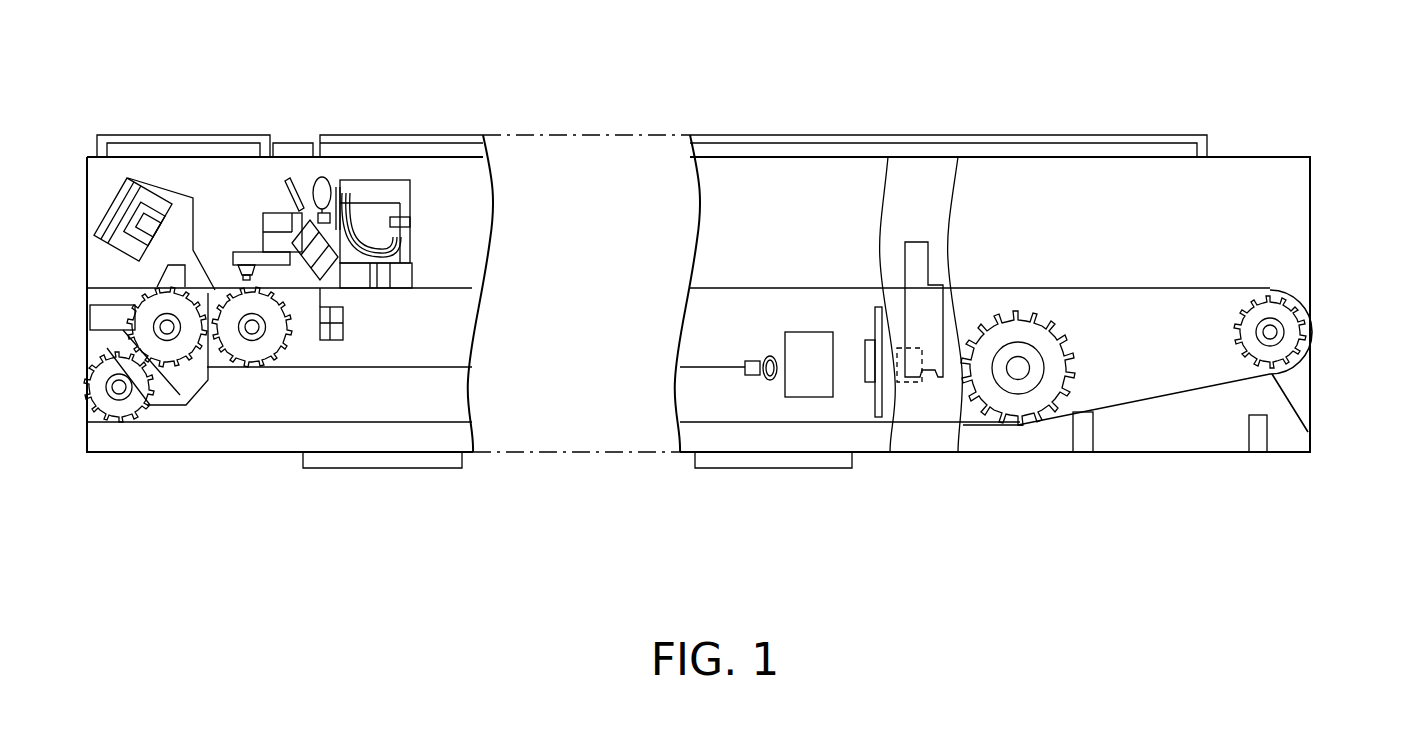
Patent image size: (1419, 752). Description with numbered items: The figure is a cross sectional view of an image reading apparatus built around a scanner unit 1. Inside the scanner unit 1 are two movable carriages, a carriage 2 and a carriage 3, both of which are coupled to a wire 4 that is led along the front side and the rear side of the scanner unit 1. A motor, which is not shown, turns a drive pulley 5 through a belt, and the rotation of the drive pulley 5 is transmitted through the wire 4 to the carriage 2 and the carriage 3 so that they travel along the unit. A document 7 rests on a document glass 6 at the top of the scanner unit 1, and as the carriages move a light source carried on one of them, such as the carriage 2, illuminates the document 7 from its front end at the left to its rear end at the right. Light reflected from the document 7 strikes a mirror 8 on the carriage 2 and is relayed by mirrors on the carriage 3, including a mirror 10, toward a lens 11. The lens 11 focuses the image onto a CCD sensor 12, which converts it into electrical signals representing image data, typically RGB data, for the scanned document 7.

The scanner unit 1 is at (1310, 238).
The carriage 2 is at (405, 182).
The carriage 3 is at (122, 212).
The wire 4 is at (788, 290).
The drive pulley 5 is at (1035, 425).
The document glass 6 is at (1153, 135).
The document 7 is at (805, 135).
The mirror 8 is at (160, 202).
The mirror 10 is at (158, 372).
The lens 11 is at (806, 400).
The CCD sensor 12 is at (860, 420).